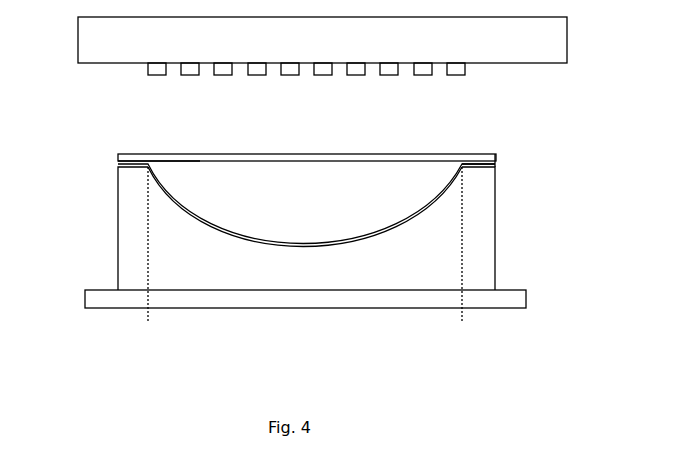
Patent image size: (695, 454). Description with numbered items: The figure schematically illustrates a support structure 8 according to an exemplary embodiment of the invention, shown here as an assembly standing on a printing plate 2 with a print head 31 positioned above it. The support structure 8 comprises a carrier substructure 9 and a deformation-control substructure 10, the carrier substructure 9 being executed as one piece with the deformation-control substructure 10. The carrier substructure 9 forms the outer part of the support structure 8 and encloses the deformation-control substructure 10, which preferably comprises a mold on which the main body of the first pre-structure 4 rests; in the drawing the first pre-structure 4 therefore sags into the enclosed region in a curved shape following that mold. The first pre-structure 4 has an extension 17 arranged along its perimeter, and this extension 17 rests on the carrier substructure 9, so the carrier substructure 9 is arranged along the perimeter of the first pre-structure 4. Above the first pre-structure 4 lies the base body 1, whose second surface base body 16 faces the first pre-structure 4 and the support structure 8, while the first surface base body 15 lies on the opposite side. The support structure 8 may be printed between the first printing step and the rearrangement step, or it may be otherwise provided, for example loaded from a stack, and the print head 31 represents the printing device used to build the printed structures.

The print head 31 is at (540, 50).
The base body 1 is at (253, 157).
The second surface base body 16 is at (165, 153).
The extension 17 is at (495, 141).
The first surface base body 15 is at (407, 163).
The first pre-structure 4 is at (203, 182).
The support structure 8 is at (130, 232).
The printing plate 2 is at (130, 299).
The carrier substructure 9 is at (148, 314).
The deformation-control substructure 10 is at (148, 323).